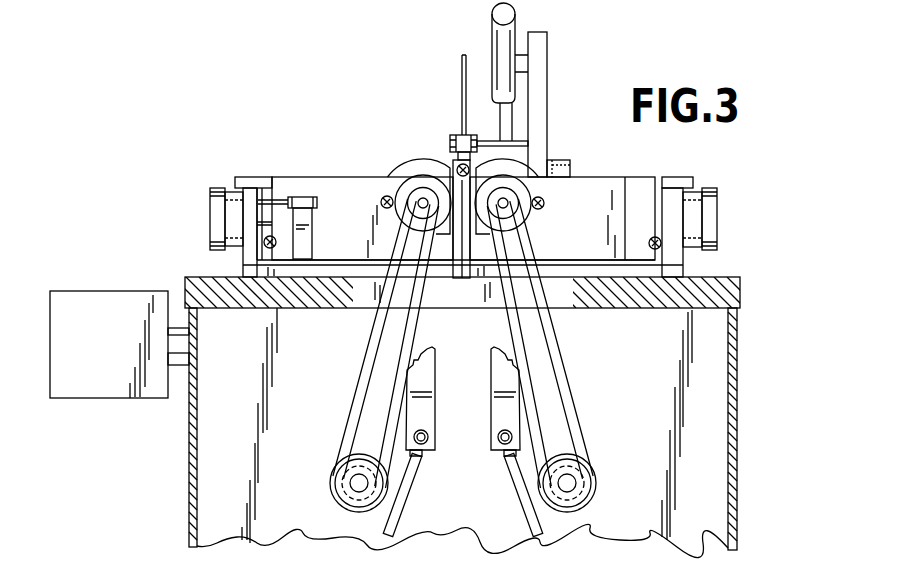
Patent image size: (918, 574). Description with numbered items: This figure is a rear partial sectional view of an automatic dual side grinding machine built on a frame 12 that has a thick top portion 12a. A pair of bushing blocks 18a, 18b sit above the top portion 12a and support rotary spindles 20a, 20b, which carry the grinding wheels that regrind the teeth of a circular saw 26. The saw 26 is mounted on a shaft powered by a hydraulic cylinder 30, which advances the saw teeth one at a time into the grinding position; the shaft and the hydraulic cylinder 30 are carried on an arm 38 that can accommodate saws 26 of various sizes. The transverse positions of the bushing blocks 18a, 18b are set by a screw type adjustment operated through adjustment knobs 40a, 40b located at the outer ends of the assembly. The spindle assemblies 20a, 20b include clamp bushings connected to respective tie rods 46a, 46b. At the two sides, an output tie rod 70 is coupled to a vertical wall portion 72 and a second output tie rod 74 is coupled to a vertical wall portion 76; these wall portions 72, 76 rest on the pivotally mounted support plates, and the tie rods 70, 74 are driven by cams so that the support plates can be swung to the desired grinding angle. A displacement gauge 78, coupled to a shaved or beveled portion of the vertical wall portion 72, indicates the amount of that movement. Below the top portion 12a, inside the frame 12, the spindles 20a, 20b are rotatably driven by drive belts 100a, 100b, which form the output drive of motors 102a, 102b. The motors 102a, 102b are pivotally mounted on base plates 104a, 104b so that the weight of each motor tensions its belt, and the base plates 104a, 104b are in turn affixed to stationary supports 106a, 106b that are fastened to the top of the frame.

The frame 12 is at (738, 407).
The top portion 12a is at (742, 302).
The bushing block 18a is at (583, 177).
The bushing block 18b is at (333, 176).
The rotary spindle 20a is at (508, 190).
The rotary spindle 20b is at (430, 190).
The circular saw 26 is at (462, 95).
The hydraulic cylinder 30 is at (490, 50).
The arm 38 is at (547, 88).
The adjustment knob 40a is at (717, 217).
The adjustment knob 40b is at (210, 222).
The tie rod 46a is at (545, 203).
The tie rod 46b is at (381, 199).
The output tie rod 70 is at (263, 242).
The vertical wall portion 72 is at (243, 267).
The output tie rod 74 is at (661, 243).
The vertical wall portion 76 is at (687, 270).
The displacement gauge 78 is at (318, 202).
The drive belt 100a is at (560, 370).
The drive belt 100b is at (372, 368).
The motor 102a is at (597, 475).
The motor 102b is at (330, 475).
The base plate 104a is at (527, 487).
The base plate 104b is at (413, 508).
The stationary support 106a is at (485, 417).
The stationary support 106b is at (443, 367).